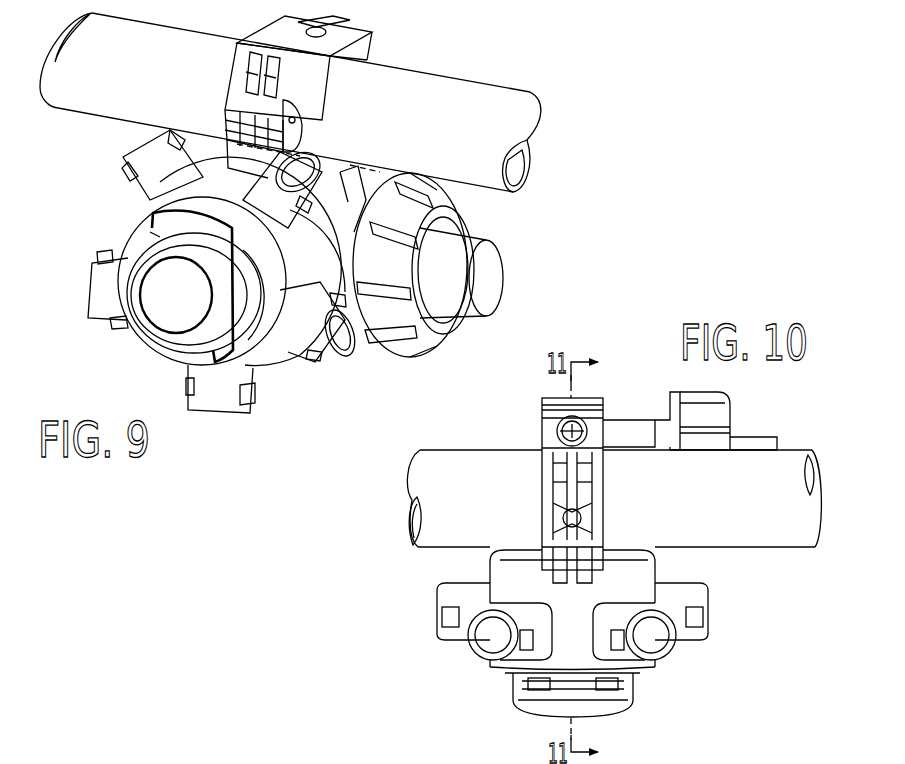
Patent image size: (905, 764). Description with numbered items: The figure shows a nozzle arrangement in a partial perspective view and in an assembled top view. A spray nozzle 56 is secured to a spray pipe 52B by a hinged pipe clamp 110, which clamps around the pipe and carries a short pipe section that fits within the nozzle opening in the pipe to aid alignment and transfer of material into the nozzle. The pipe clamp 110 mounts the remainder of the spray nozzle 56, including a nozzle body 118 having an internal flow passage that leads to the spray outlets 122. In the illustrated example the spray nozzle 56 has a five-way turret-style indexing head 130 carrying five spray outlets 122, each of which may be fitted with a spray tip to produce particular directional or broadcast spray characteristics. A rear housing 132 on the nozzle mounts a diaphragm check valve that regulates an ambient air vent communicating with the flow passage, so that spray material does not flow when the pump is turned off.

In FIG. 9, the spray pipe 52B is at (488, 103).
In FIG. 10, the spray pipe 52B is at (773, 523).
In FIG. 9, the hinged pipe clamp 110 is at (352, 45).
In FIG. 10, the hinged pipe clamp 110 is at (594, 418).
In FIG. 9, the spray nozzle 56 is at (122, 213).
In FIG. 10, the spray nozzle 56 is at (442, 675).
In FIG. 9, the nozzle body 118 is at (272, 342).
In FIG. 10, the nozzle body 118 is at (642, 583).
In FIG. 9, the spray outlets 122 is at (143, 150).
In FIG. 10, the spray outlets 122 is at (437, 617).
In FIG. 9, the 5-way turret-style indexing head 130 is at (307, 254).
In FIG. 10, the 5-way turret-style indexing head 130 is at (505, 584).
In FIG. 9, the rear housing 132 is at (365, 195).
In FIG. 10, the rear housing 132 is at (628, 432).